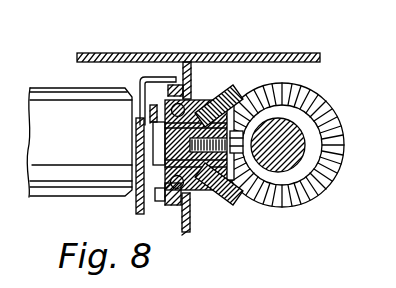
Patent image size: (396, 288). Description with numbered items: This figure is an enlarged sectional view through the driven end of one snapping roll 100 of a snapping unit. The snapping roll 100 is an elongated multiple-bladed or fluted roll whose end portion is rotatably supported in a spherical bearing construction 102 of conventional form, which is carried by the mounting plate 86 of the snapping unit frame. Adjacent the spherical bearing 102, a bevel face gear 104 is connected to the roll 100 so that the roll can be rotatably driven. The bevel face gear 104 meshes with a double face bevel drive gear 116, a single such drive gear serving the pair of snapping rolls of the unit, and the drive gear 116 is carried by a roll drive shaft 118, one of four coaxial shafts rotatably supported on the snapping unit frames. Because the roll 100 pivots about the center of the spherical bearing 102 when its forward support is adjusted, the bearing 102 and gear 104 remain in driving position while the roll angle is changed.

The mounting plate 86 is at (280, 62).
The snapping roll 100 is at (52, 114).
The spherical bearing construction 102 is at (163, 96).
The bevel face gear 104 is at (212, 183).
The double face bevel drive gear 116 is at (333, 110).
The roll drive shaft 118 is at (294, 155).